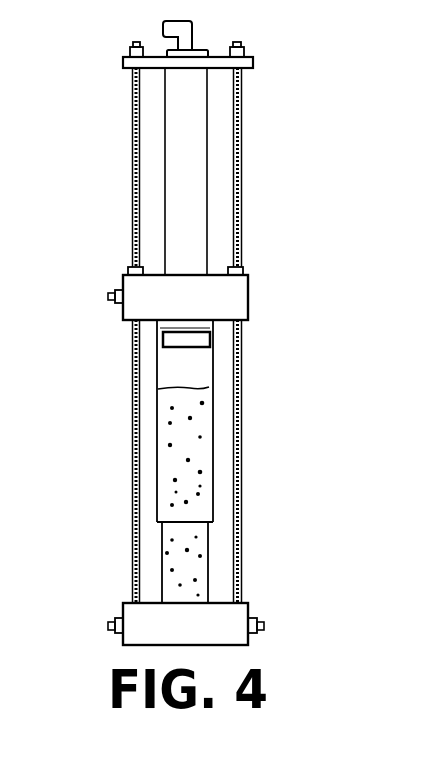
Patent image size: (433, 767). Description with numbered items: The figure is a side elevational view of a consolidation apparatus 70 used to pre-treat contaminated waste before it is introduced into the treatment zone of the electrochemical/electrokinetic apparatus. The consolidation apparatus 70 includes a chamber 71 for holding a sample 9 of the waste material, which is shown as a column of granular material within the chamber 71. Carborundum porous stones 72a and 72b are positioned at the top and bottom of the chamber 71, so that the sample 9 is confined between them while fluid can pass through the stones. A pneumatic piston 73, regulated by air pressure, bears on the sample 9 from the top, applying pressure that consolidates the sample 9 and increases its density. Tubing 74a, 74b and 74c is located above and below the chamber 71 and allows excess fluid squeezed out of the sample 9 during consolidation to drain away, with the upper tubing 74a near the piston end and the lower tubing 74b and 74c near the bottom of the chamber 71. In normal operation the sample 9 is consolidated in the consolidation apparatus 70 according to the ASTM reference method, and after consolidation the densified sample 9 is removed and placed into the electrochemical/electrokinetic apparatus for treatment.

The consolidation apparatus 70 is at (286, 124).
The tubing 74a is at (107, 296).
The tubing 74b is at (108, 625).
The tubing 74c is at (265, 624).
The pneumatic piston 73 is at (154, 329).
The carborundum porous stone 72a is at (172, 353).
The carborundum porous stone 72b is at (166, 592).
The chamber 71 is at (177, 463).
The sample 9 is at (200, 487).